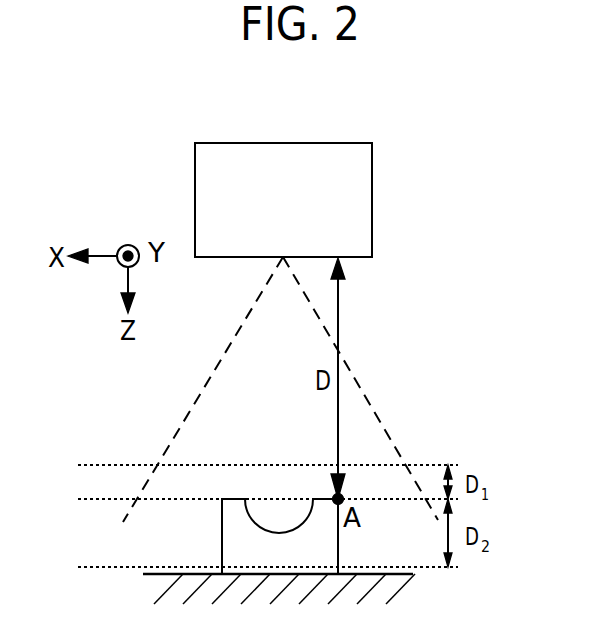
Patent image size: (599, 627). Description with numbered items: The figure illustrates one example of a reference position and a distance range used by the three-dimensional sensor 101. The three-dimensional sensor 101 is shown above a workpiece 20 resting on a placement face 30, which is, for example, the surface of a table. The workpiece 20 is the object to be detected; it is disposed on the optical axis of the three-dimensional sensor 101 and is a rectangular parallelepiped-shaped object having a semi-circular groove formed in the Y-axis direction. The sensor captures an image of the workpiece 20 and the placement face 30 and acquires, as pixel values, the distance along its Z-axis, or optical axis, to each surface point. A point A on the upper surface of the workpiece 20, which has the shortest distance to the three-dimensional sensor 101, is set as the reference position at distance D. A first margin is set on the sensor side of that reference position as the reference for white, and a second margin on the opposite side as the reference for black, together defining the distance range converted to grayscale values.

The three-dimensional sensor 101 is at (284, 143).
The workpiece 20 is at (222, 543).
The placement face 30 is at (146, 574).